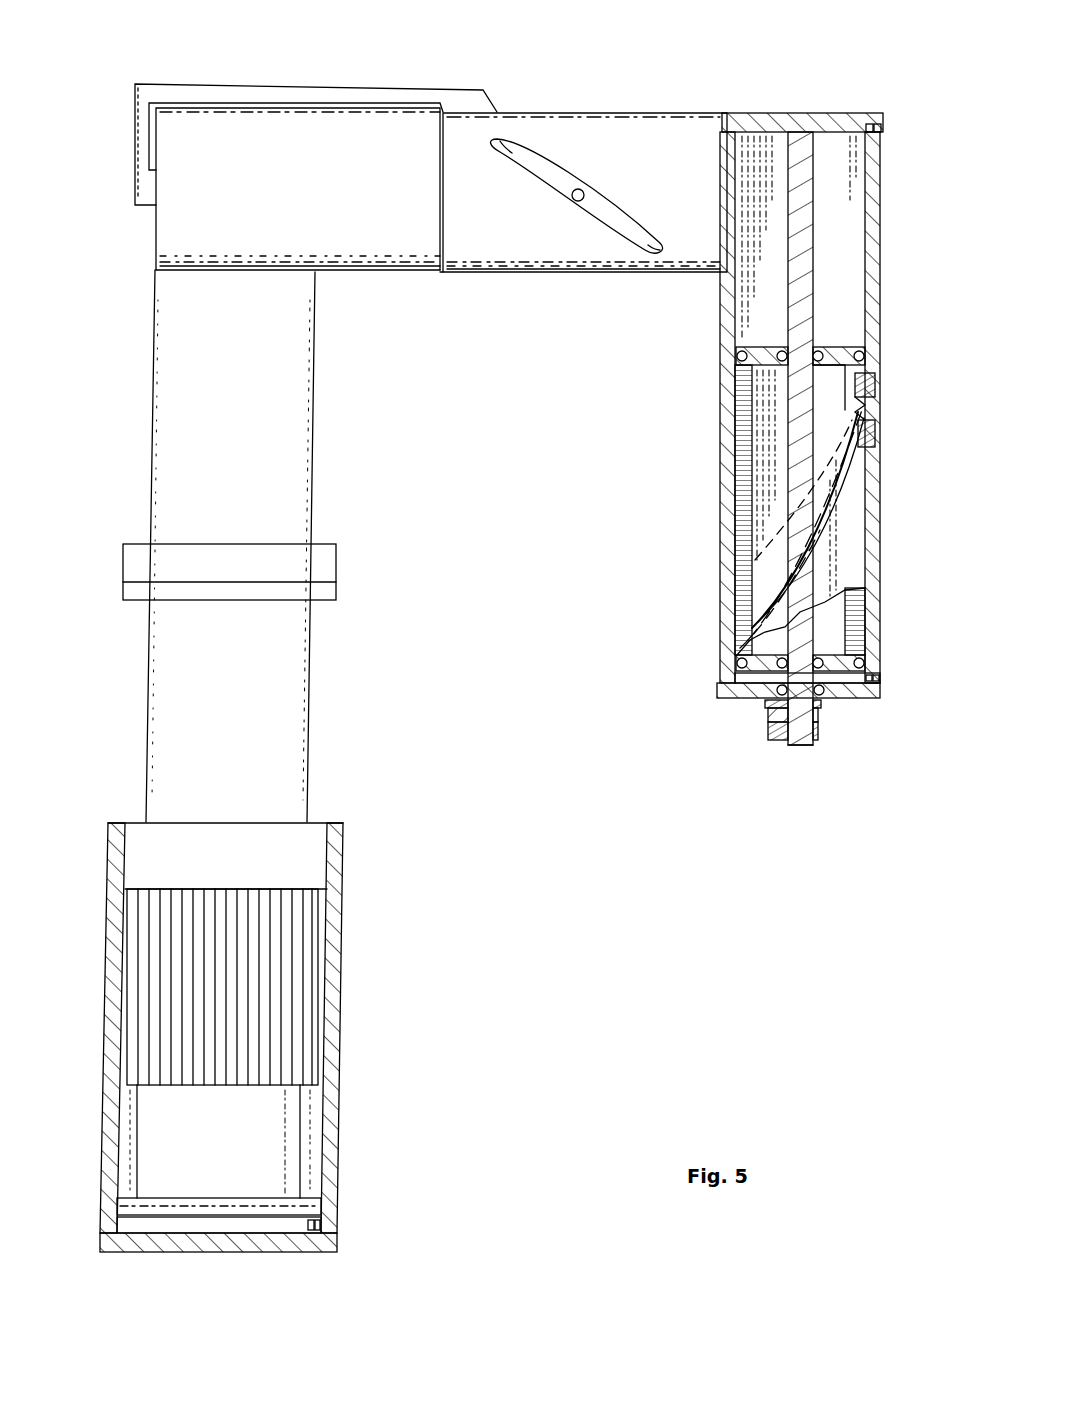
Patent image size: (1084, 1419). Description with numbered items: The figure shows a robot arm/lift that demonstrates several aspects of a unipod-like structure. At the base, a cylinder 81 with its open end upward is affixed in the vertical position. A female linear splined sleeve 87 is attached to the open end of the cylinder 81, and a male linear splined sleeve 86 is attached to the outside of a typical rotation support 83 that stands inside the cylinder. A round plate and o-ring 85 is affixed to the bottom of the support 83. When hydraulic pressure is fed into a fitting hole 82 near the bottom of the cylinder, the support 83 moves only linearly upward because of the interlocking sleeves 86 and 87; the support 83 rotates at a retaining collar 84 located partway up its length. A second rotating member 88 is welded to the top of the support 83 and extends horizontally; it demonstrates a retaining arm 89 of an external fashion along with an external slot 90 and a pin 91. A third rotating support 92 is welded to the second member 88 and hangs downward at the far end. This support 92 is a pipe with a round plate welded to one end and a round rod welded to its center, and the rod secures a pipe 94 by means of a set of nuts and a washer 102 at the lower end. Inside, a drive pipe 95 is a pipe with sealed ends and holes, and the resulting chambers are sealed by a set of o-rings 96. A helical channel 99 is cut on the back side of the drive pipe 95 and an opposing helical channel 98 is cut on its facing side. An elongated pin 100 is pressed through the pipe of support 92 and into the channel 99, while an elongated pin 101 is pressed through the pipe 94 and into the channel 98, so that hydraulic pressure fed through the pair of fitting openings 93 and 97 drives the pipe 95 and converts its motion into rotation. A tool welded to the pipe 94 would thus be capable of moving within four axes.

The cylinder 81 is at (338, 1022).
The fitting hole 82 is at (338, 1226).
The rotation support 83 is at (286, 693).
The retaining collar 84 is at (322, 566).
The round plate and o-ring 85 is at (316, 1204).
The male linear splined sleeve 86 is at (275, 961).
The female linear splined sleeve 87 is at (193, 840).
The second rotating member 88 is at (390, 225).
The retaining arm 89 is at (161, 88).
The external slot 90 is at (546, 160).
The pin 91 is at (582, 193).
The third rotating support 92 is at (803, 122).
The fitting opening 93 is at (884, 135).
The pipe 94 is at (722, 521).
The drive pipe 95 is at (738, 346).
The o-rings 96 is at (738, 664).
The fitting opening 97 is at (872, 678).
The opposing helical channel 98 is at (822, 518).
The helical channel 99 is at (782, 522).
The elongated pin 100 is at (876, 380).
The elongated pin 101 is at (876, 432).
The set of nuts and a washer 102 is at (776, 706).